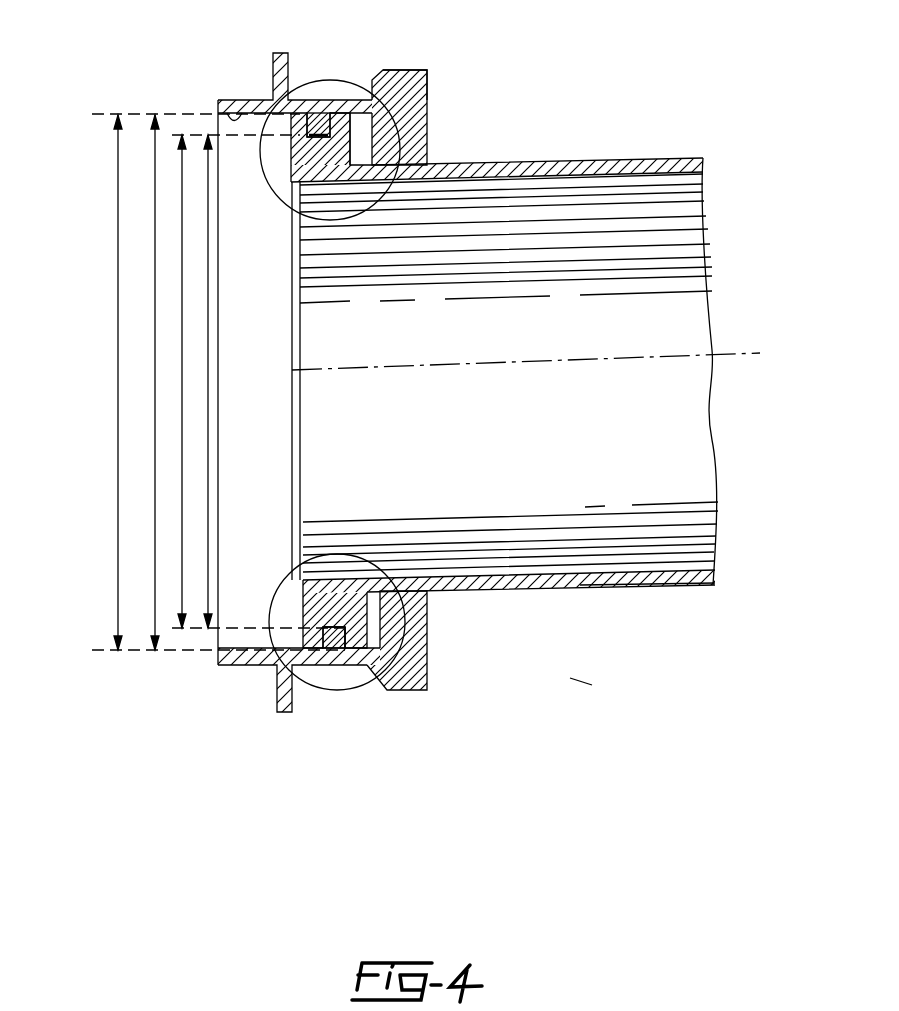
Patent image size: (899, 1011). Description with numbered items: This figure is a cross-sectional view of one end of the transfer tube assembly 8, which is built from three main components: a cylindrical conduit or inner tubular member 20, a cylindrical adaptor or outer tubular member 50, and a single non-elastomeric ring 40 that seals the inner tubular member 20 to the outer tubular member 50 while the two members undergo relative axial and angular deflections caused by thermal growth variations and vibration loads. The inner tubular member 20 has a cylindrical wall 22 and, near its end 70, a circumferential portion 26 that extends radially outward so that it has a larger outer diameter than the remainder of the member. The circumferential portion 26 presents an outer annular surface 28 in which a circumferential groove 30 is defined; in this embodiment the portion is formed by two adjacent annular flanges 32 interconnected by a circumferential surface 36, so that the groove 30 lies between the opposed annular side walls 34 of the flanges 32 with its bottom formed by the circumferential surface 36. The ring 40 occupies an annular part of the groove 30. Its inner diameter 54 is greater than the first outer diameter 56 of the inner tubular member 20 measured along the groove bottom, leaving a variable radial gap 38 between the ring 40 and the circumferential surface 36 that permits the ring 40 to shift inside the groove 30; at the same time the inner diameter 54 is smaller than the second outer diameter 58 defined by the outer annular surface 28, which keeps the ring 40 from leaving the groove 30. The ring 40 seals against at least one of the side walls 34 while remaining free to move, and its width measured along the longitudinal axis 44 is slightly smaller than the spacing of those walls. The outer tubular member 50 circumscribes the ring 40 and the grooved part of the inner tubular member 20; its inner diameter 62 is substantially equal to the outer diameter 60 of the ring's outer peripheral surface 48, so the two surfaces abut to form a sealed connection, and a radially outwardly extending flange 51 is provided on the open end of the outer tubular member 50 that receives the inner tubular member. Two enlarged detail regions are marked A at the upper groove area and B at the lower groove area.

The transfer tube assembly 8 is at (567, 677).
The inner tubular member 20 is at (586, 260).
The cylindrical wall 22 is at (625, 158).
The circumferential portion 26 is at (332, 166).
The outer annular surface 28 is at (355, 112).
The circumferential groove 30 is at (400, 137).
The annular flanges 32 is at (347, 112).
The annular side walls 34 is at (303, 650).
The circumferential surface 36 is at (355, 610).
The radial gap 38 is at (358, 642).
The non-elastomeric ring 40 is at (323, 642).
The longitudinal axis 44 is at (650, 357).
The outer peripheral surface 48 is at (338, 645).
The outer tubular member 50 is at (412, 690).
The radially outwardly extending flange 51 is at (417, 68).
The inner diameter of the ring 54 is at (182, 402).
The first outer diameter 56 is at (208, 453).
The second outer diameter 58 is at (155, 358).
The outer diameter of the ring 60 is at (71, 382).
The inner diameter of the outer tubular member 62 is at (118, 307).
The end of the inner tubular member 70 is at (582, 593).
The detail circle A is at (425, 112).
The detail circle B is at (345, 650).